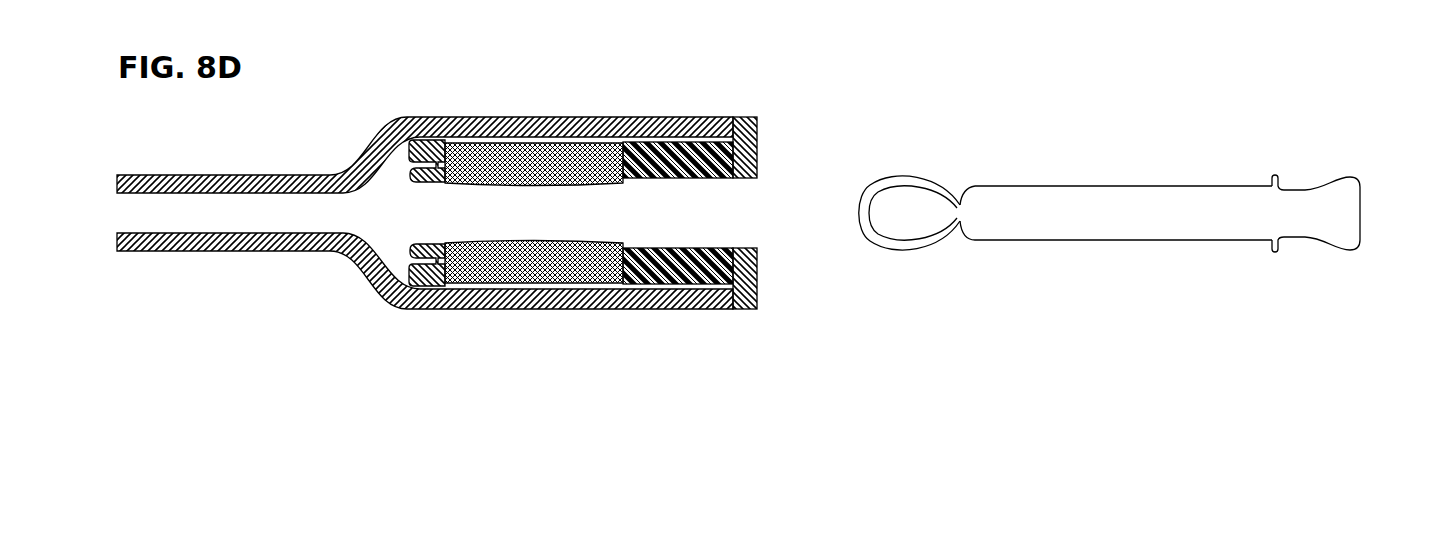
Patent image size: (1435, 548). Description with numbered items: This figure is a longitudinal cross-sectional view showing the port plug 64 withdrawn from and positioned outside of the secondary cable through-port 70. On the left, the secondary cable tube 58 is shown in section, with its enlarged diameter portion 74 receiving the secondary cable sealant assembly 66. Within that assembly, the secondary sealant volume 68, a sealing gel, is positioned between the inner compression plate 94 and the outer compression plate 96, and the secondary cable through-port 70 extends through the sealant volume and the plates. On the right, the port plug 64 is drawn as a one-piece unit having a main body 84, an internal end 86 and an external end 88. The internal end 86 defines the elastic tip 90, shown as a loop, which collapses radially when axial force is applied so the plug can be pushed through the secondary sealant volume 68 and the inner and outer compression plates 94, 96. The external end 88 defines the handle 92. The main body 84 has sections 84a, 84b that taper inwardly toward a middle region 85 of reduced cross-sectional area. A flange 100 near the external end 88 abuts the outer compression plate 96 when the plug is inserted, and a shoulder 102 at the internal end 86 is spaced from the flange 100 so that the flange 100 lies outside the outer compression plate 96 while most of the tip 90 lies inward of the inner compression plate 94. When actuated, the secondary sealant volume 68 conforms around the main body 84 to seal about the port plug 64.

The secondary cable tube 58 is at (197, 175).
The port plug 64 is at (1362, 258).
The secondary cable sealant assembly 66 is at (757, 118).
The secondary sealant volume 68 is at (580, 158).
The secondary cable through-port 70 is at (520, 227).
The enlarged diameter portion 74 is at (508, 120).
The main body 84 is at (1114, 186).
The section 84a is at (988, 185).
The section 84b is at (1207, 187).
The middle region 85 is at (1170, 187).
The internal end 86 is at (964, 184).
The external end 88 is at (1320, 172).
The tip 90 is at (930, 176).
The handle 92 is at (1362, 200).
The inner compression plate 94 is at (417, 148).
The outer compression plate 96 is at (672, 140).
The flange 100 is at (1277, 176).
The shoulder 102 is at (966, 230).